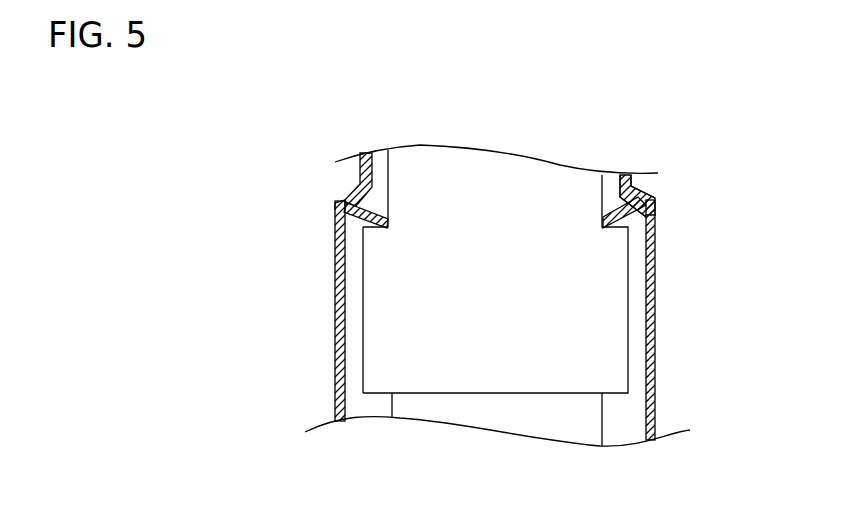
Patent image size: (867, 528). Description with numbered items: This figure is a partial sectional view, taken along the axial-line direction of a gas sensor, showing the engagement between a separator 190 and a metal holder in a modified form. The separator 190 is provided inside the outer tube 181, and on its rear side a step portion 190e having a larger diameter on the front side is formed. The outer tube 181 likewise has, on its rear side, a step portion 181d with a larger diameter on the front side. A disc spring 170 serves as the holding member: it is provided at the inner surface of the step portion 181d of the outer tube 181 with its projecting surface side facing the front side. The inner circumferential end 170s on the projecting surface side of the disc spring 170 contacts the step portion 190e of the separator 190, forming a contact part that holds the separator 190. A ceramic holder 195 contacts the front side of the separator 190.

The disc spring 170 is at (345, 213).
The inner circumferential end 170s is at (386, 227).
The outer tube 181 is at (340, 295).
The step portion 181d is at (340, 197).
The separator 190 is at (632, 317).
The step portion 190e is at (653, 225).
The ceramic holder 195 is at (497, 420).